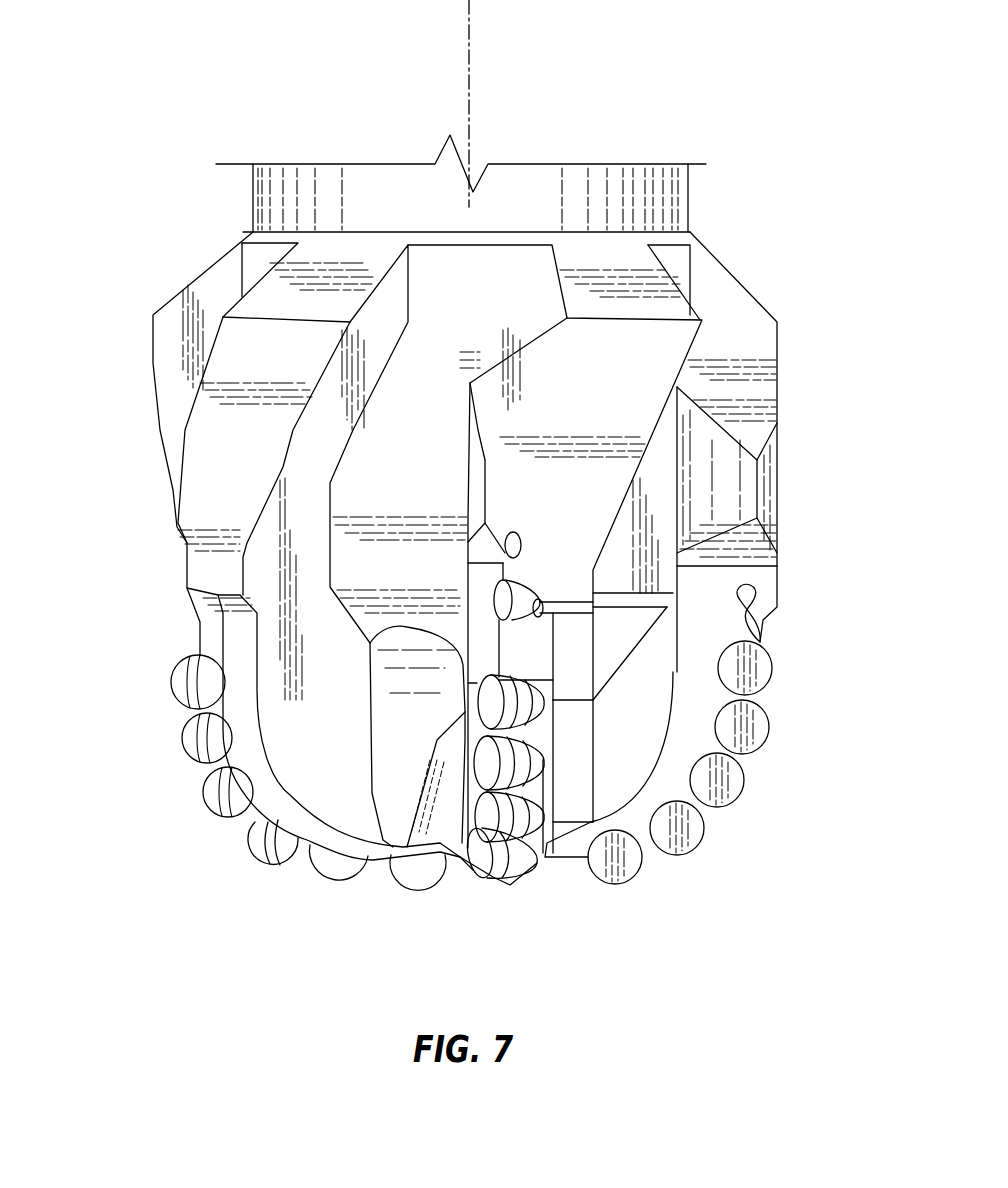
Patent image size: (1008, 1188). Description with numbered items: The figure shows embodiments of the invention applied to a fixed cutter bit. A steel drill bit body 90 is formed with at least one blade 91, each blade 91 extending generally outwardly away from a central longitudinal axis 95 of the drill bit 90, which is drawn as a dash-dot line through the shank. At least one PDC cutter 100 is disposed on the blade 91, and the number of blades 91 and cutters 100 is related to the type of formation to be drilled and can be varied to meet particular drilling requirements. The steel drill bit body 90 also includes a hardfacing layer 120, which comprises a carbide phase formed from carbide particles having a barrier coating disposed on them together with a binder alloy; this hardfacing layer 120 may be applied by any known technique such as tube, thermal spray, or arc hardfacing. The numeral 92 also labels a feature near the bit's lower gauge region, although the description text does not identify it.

The central longitudinal axis 95 is at (468, 63).
The steel drill bit body 90 is at (775, 320).
The blade 91 is at (652, 853).
The PDC cutter 100 is at (773, 670).
The cutting element 92 is at (250, 817).
The hardfacing layer 120 is at (230, 768).